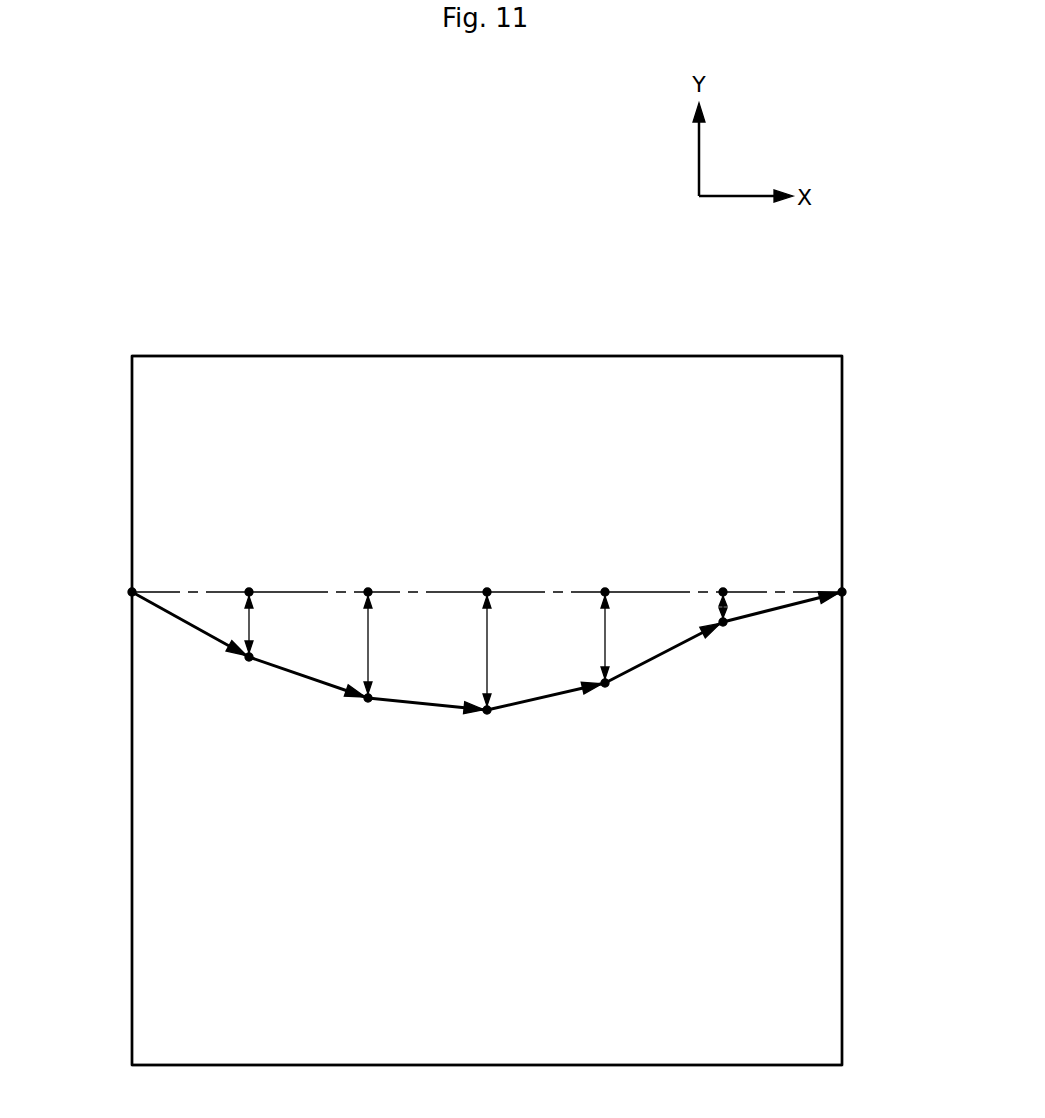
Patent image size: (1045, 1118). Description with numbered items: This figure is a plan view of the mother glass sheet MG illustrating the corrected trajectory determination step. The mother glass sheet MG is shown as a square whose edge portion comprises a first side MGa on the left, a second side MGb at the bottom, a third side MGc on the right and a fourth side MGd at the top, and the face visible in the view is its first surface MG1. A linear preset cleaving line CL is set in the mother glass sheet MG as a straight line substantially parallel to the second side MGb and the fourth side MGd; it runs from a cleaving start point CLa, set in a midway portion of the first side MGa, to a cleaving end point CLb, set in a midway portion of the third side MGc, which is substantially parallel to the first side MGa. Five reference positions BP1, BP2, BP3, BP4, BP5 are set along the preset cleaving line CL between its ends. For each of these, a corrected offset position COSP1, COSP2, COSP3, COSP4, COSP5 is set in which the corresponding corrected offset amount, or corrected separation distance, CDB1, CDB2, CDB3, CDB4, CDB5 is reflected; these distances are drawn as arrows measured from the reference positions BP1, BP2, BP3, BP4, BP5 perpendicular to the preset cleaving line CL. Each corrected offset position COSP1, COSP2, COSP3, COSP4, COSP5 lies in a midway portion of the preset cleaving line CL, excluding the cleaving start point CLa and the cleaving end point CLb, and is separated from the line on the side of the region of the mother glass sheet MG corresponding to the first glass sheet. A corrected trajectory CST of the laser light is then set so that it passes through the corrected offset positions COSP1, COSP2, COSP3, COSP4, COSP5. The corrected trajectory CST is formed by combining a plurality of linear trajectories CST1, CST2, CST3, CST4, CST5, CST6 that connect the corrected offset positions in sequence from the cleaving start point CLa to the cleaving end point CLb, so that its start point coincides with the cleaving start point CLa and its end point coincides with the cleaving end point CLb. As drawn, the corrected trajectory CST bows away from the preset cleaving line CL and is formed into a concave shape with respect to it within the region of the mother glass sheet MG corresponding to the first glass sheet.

The mother glass sheet MG is at (513, 326).
The first side MGa is at (132, 440).
The second side MGb is at (477, 1065).
The third side MGc is at (842, 826).
The fourth side MGd is at (367, 356).
The first surface MG1 is at (633, 388).
The preset cleaving line CL is at (657, 592).
The cleaving start point CLa is at (132, 594).
The cleaving end point CLb is at (844, 594).
The reference position BP1 is at (249, 579).
The reference position BP2 is at (368, 579).
The reference position BP3 is at (487, 579).
The reference position BP4 is at (605, 579).
The reference position BP5 is at (723, 579).
The corrected offset amount CDB1 is at (282, 624).
The corrected offset amount CDB2 is at (400, 645).
The corrected offset amount CDB3 is at (519, 651).
The corrected offset amount CDB4 is at (637, 637).
The corrected offset amount CDB5 is at (735, 605).
The corrected trajectory CST is at (487, 725).
The linear trajectory CST1 is at (181, 619).
The linear trajectory CST2 is at (299, 676).
The linear trajectory CST3 is at (422, 704).
The linear trajectory CST4 is at (543, 697).
The linear trajectory CST5 is at (665, 652).
The linear trajectory CST6 is at (783, 608).
The corrected offset position COSP1 is at (247, 661).
The corrected offset position COSP2 is at (366, 702).
The corrected offset position COSP3 is at (487, 714).
The corrected offset position COSP4 is at (604, 687).
The corrected offset position COSP5 is at (724, 626).